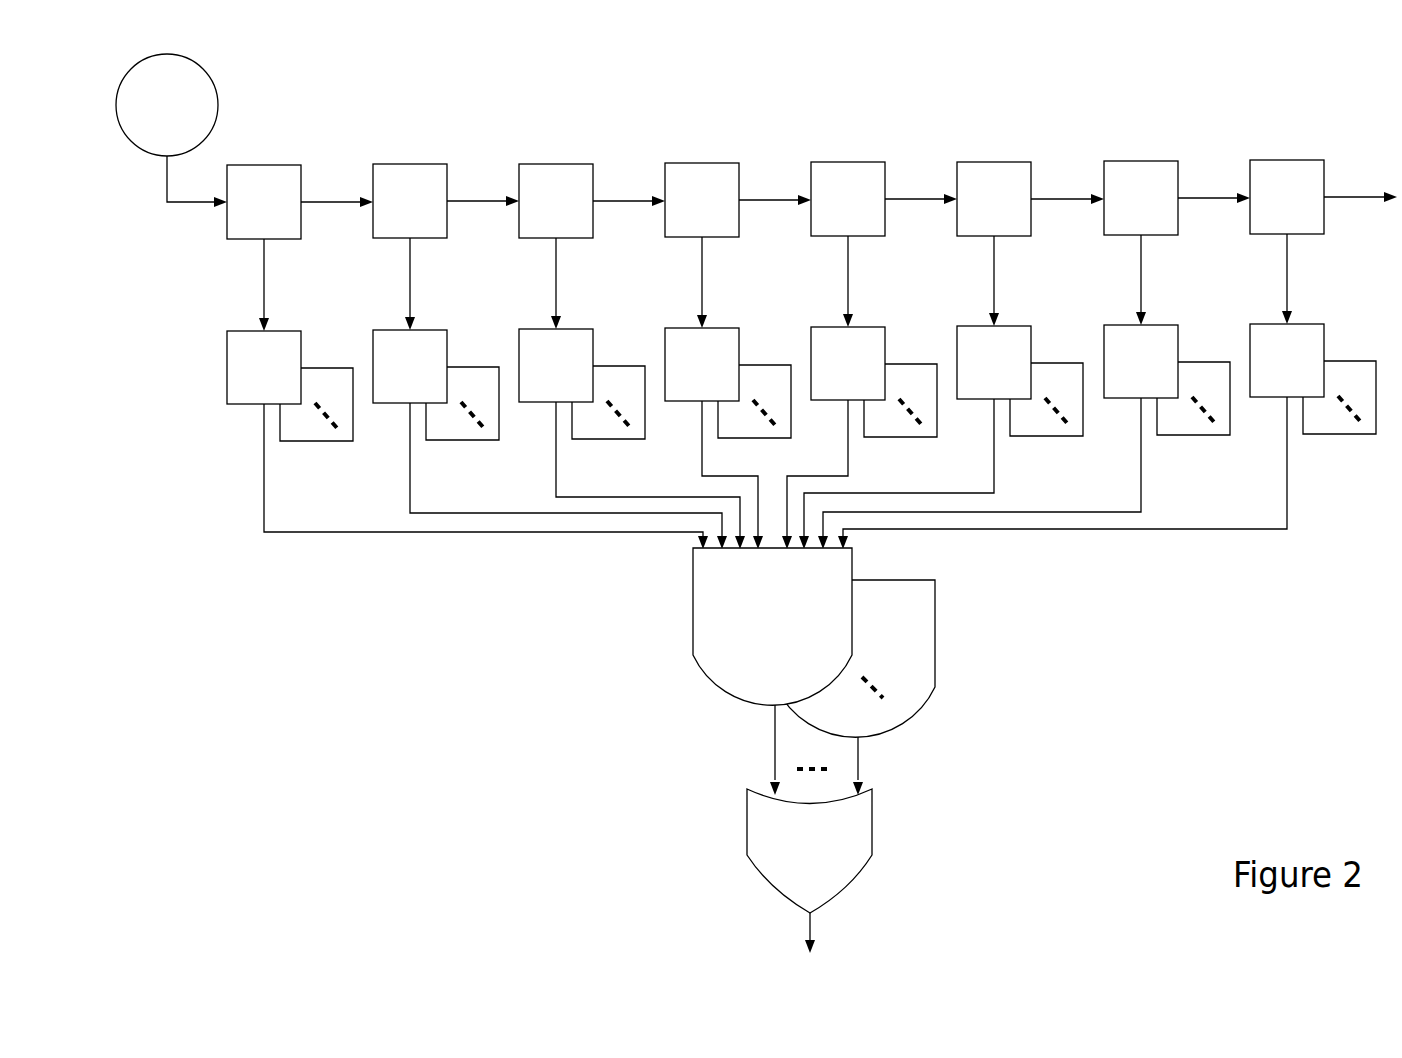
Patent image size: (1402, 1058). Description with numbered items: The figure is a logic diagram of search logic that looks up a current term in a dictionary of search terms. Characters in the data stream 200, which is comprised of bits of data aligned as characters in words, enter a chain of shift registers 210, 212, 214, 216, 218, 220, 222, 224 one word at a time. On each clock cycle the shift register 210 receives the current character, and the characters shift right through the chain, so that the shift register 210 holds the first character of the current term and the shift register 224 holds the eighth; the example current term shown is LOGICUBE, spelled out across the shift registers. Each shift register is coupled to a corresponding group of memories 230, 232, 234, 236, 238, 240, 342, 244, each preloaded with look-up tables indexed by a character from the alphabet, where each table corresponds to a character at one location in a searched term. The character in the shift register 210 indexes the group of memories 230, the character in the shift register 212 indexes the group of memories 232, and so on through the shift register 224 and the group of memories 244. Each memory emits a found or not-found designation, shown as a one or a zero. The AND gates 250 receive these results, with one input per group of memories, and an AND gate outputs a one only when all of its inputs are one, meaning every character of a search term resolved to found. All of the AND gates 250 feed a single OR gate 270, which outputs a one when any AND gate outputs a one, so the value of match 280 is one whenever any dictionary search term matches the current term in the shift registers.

The data stream 200 is at (171, 130).
The shift register 210 is at (263, 165).
The shift register 212 is at (409, 164).
The shift register 214 is at (555, 164).
The shift register 216 is at (701, 163).
The shift register 218 is at (847, 162).
The shift register 220 is at (993, 162).
The shift register 222 is at (1140, 161).
The shift register 224 is at (1286, 160).
The group of memories 230 is at (288, 331).
The group of memories 232 is at (434, 330).
The group of memories 234 is at (580, 329).
The group of memories 236 is at (726, 328).
The group of memories 238 is at (872, 327).
The group of memories 240 is at (1018, 326).
The comparator 342 is at (1165, 325).
The group of memories 244 is at (1311, 324).
The AND gates 250 is at (693, 607).
The OR gate 270 is at (747, 855).
The match 280 is at (812, 936).